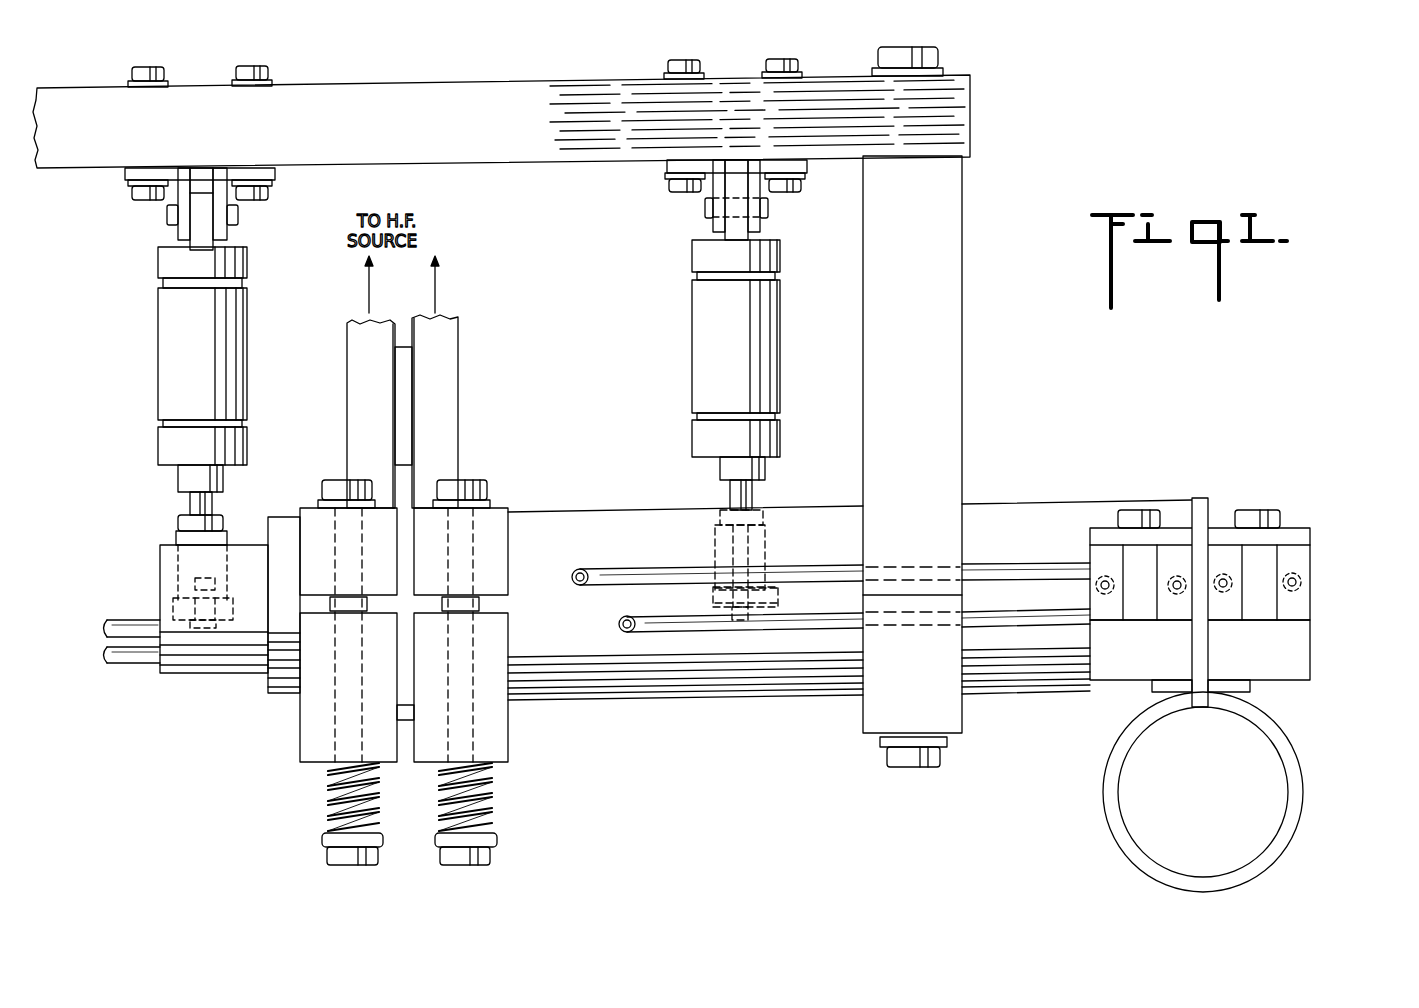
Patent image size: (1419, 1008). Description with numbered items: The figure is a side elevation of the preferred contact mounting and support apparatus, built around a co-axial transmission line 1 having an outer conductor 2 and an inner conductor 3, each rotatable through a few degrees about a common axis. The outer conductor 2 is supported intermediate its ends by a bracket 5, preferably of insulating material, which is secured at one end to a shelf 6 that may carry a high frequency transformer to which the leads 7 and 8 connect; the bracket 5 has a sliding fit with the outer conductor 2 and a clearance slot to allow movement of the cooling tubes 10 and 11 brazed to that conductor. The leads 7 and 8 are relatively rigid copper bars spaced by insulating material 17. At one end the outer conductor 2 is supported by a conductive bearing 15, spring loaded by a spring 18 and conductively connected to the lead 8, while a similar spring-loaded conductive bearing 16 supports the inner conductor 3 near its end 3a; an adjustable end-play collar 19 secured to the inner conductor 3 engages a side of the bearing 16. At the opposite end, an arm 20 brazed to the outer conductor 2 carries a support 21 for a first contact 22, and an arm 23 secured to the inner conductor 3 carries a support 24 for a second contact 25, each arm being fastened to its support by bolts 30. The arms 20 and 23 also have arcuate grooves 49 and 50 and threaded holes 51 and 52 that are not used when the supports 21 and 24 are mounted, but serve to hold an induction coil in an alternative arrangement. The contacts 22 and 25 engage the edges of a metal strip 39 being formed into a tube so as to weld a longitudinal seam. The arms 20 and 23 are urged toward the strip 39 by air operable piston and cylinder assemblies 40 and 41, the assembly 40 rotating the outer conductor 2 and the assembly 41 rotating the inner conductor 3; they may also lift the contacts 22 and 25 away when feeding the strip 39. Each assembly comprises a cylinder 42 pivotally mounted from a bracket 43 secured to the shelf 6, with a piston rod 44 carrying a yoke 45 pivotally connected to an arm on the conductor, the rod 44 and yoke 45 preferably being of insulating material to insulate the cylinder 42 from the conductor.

The co-axial transmission line 1 is at (592, 505).
The outer conductor 2 is at (1027, 513).
The inner conductor 3 is at (98, 603).
The end of inner conductor 3a is at (165, 545).
The bracket 5 is at (962, 450).
The shelf 6 is at (962, 112).
The lead 7 is at (355, 390).
The lead 8 is at (448, 383).
The cooling tube 10 is at (657, 572).
The cooling tube 11 is at (668, 600).
The conductive bearing 15 is at (498, 515).
The conductive bearing 16 is at (305, 517).
The insulating material 17 is at (400, 432).
The spring 18 is at (335, 798).
The end-play collar 19 is at (278, 693).
The arm 20 is at (1100, 560).
The contact support 21 is at (1097, 683).
The first contact 22 is at (1155, 690).
The arm 23 is at (1312, 598).
The contact support 24 is at (1312, 662).
The second contact 25 is at (1250, 688).
The bolts 30 is at (1235, 512).
The strip 39 is at (1300, 782).
The piston and cylinder assembly 40 is at (683, 358).
The piston and cylinder assembly 41 is at (257, 345).
The cylinder 42 is at (777, 353).
The bracket 43 is at (753, 190).
The piston rod 44 is at (750, 492).
The yoke 45 is at (770, 547).
The arcuate groove 49 is at (1147, 568).
The arcuate groove 50 is at (1255, 565).
The threaded hole 51 is at (1172, 585).
The threaded hole 52 is at (1285, 583).